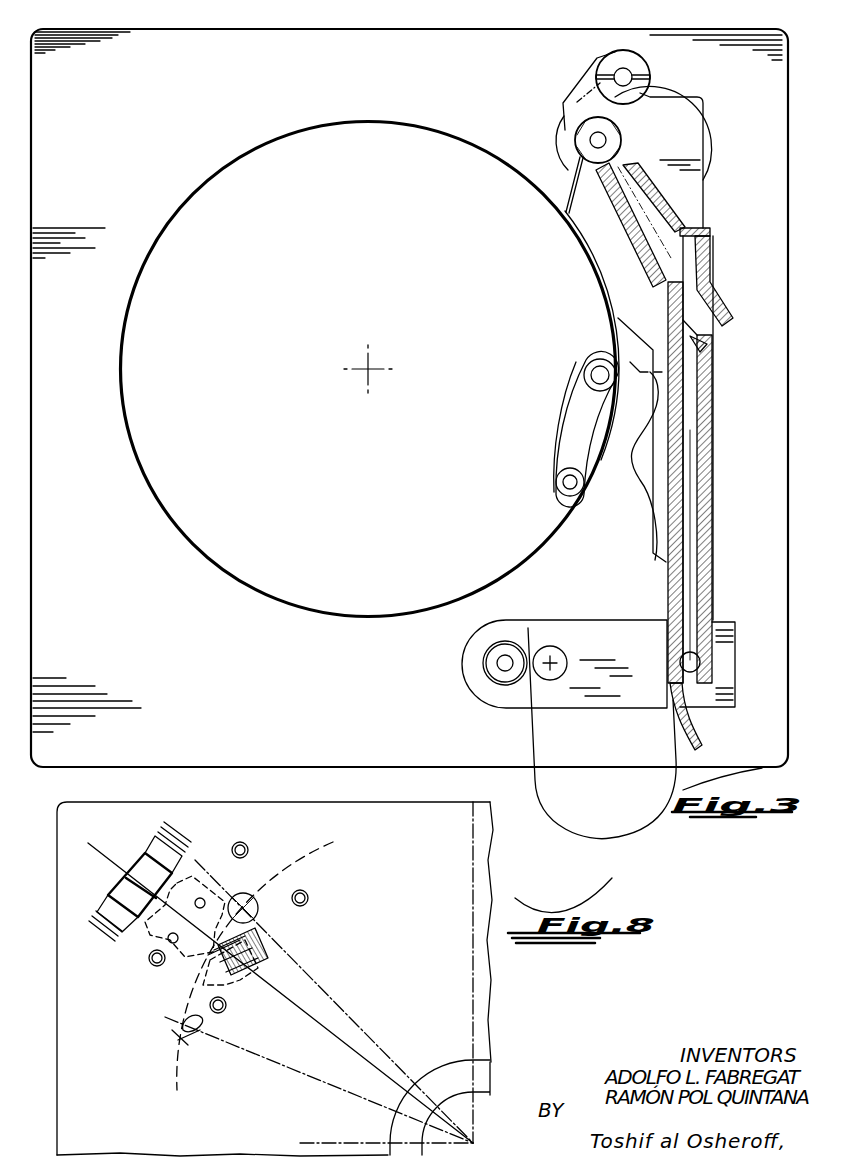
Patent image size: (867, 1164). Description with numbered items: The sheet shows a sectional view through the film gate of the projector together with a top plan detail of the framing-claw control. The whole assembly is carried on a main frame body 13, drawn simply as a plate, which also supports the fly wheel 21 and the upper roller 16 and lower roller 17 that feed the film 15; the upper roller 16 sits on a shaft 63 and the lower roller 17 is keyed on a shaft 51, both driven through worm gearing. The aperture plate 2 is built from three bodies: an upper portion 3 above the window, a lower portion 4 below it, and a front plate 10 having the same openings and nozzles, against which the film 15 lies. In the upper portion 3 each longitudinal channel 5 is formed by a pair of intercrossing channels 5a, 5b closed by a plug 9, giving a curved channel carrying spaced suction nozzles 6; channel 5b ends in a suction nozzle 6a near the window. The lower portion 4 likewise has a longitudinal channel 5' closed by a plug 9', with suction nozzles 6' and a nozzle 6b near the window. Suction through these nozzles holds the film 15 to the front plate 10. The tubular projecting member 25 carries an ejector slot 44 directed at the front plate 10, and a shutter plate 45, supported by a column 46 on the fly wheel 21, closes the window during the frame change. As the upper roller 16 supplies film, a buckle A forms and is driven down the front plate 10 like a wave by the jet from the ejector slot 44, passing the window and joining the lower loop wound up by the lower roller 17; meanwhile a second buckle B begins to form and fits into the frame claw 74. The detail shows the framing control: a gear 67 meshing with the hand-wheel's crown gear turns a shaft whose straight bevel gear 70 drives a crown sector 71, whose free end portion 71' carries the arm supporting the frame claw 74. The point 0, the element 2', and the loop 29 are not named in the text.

In FIG. 3, the main frame body 13 is at (457, 42).
In FIG. 8, the main frame body 13 is at (436, 818).
In FIG. 3, the fly wheel 21 is at (290, 596).
In FIG. 8, the fly wheel 21 is at (318, 852).
In FIG. 3, the center axis 0 is at (365, 377).
In FIG. 8, the center axis 0 is at (482, 1143).
In FIG. 3, the second buckle B is at (577, 236).
In FIG. 3, the shaft 63 is at (645, 98).
In FIG. 3, the upper roller 16 is at (624, 124).
In FIG. 3, the film 15 is at (715, 172).
In FIG. 3, the upper portion 3 is at (684, 209).
In FIG. 3, the plug 9 is at (711, 282).
In FIG. 3, the longitudinal channel 5 is at (720, 428).
In FIG. 3, the intercrossing channel 5a is at (716, 234).
In FIG. 3, the intercrossing channel 5b is at (716, 260).
In FIG. 3, the aperture plate 2 is at (751, 305).
In FIG. 3, the suction nozzle 6 is at (637, 384).
In FIG. 3, the suction nozzle 6a is at (700, 370).
In FIG. 3, the suction nozzle 6b is at (712, 416).
In FIG. 3, the suction nozzle 6' is at (655, 482).
In FIG. 3, the longitudinal channel 5' is at (720, 509).
In FIG. 3, the lower portion 4 is at (712, 528).
In FIG. 3, the tubular projecting member 25 is at (586, 398).
In FIG. 3, the ejector slot 44 is at (623, 371).
In FIG. 3, the column 46 is at (588, 486).
In FIG. 3, the shutter plate 45 is at (615, 469).
In FIG. 3, the buckle A is at (648, 460).
In FIG. 3, the lower roller 17 is at (512, 688).
In FIG. 3, the shaft 51 is at (485, 664).
In FIG. 3, the plug 9' is at (718, 665).
In FIG. 3, the ball 2' is at (722, 656).
In FIG. 3, the front plate 10 is at (700, 736).
In FIG. 3, the tape loop 29 is at (645, 832).
In FIG. 8, the gear 67 is at (168, 881).
In FIG. 8, the crown sector 71 is at (235, 921).
In FIG. 8, the straight bevel gear 70 is at (250, 968).
In FIG. 8, the frame claw 74 is at (190, 1032).
In FIG. 8, the free end portion 71' is at (227, 1058).